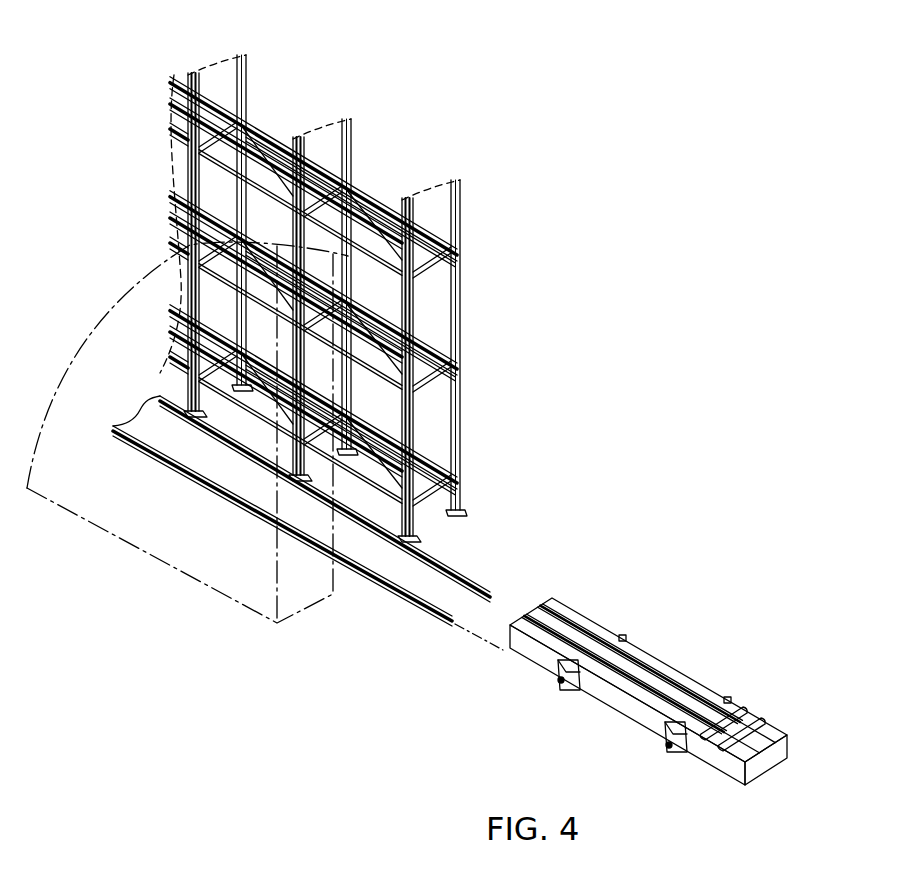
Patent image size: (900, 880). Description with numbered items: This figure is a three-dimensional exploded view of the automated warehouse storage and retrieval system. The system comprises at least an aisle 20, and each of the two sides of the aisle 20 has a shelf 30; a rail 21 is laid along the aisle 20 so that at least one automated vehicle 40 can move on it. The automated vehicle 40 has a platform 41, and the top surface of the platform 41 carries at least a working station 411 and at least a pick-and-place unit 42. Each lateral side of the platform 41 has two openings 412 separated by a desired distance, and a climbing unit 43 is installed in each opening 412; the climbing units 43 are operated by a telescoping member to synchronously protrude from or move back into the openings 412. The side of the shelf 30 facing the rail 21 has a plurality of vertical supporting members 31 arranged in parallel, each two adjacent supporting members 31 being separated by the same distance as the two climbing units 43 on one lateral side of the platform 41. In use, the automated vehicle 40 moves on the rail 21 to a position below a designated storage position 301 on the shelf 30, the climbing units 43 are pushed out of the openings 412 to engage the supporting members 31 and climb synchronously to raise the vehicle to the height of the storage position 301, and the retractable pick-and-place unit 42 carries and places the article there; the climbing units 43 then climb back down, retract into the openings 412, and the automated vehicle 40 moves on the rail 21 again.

The aisle 20 is at (308, 523).
The rail 21 is at (245, 503).
The shelf 30 is at (284, 338).
The supporting member 31 is at (188, 178).
The storage position 301 is at (268, 122).
The automated vehicle 40 is at (674, 696).
The platform 41 is at (785, 745).
The working station 411 is at (547, 622).
The opening 412 is at (560, 667).
The pick-and-place unit 42 is at (757, 717).
The climbing unit 43 is at (622, 638).